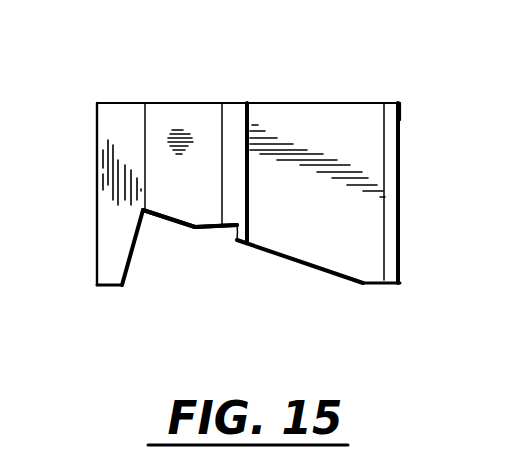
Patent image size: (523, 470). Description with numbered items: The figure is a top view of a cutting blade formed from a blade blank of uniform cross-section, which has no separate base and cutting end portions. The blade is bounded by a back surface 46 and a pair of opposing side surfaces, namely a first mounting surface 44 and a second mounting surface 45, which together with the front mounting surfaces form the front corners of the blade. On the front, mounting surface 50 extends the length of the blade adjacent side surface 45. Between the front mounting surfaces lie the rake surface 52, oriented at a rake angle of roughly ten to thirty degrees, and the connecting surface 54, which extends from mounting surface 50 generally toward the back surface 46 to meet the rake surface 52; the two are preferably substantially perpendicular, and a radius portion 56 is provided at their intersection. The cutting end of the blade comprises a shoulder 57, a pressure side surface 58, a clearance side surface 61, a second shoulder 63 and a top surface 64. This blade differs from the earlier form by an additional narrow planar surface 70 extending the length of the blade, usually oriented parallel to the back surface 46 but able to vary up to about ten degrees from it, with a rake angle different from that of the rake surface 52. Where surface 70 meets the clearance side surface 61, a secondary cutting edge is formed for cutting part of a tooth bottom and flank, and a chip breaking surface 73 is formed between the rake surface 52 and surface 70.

The first mounting surface 44 is at (400, 183).
The second mounting surface 45 is at (97, 175).
The back surface 46 is at (205, 103).
The mounting surface 50 is at (113, 287).
The rake surface 52 is at (177, 226).
The connecting surface 54 is at (131, 265).
The radius portion 56 is at (148, 215).
The shoulder 57 is at (402, 113).
The pressure side surface 58 is at (318, 115).
The clearance side surface 61 is at (176, 115).
The shoulder 63 is at (120, 125).
The top surface 64 is at (236, 115).
The narrow planar surface 70 is at (215, 228).
The chip breaking surface 73 is at (233, 230).